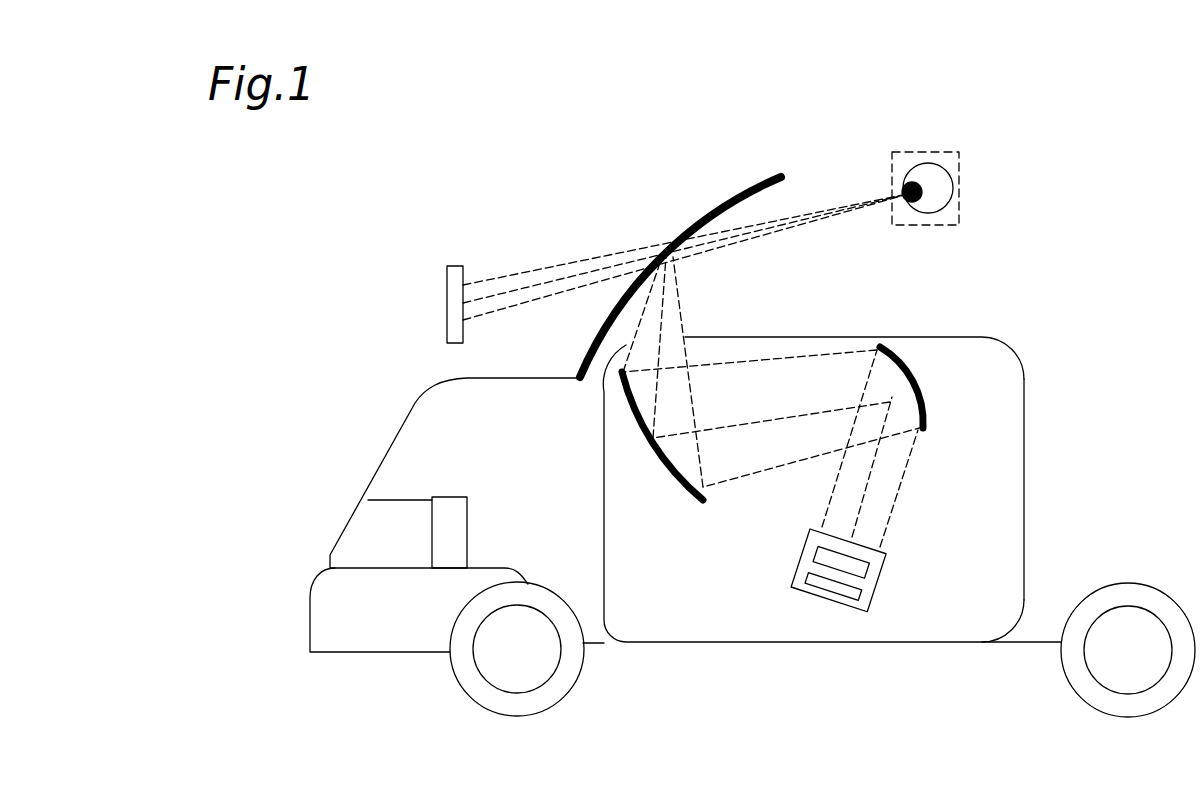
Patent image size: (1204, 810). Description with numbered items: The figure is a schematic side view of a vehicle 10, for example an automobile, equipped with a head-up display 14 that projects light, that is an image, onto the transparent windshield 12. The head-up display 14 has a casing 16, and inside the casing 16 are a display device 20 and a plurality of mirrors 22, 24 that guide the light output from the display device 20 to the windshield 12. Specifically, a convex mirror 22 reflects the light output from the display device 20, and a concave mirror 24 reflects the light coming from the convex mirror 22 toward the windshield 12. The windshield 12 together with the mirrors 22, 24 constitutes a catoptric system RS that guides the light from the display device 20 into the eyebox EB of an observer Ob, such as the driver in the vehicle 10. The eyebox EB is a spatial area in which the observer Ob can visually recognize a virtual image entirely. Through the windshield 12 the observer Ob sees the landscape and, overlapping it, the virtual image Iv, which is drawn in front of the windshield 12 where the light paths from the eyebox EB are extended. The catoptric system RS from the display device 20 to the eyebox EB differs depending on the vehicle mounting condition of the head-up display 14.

The vehicle 10 is at (1126, 210).
The windshield 12 is at (724, 203).
The head-up display 14 is at (972, 338).
The casing 16 is at (1025, 490).
The display device 20 is at (810, 531).
The convex mirror 22 is at (896, 396).
The concave mirror 24 is at (664, 467).
The observer Ob is at (957, 178).
The eyebox EB is at (960, 219).
The virtual image Iv is at (447, 305).
The catoptric system RS is at (795, 306).